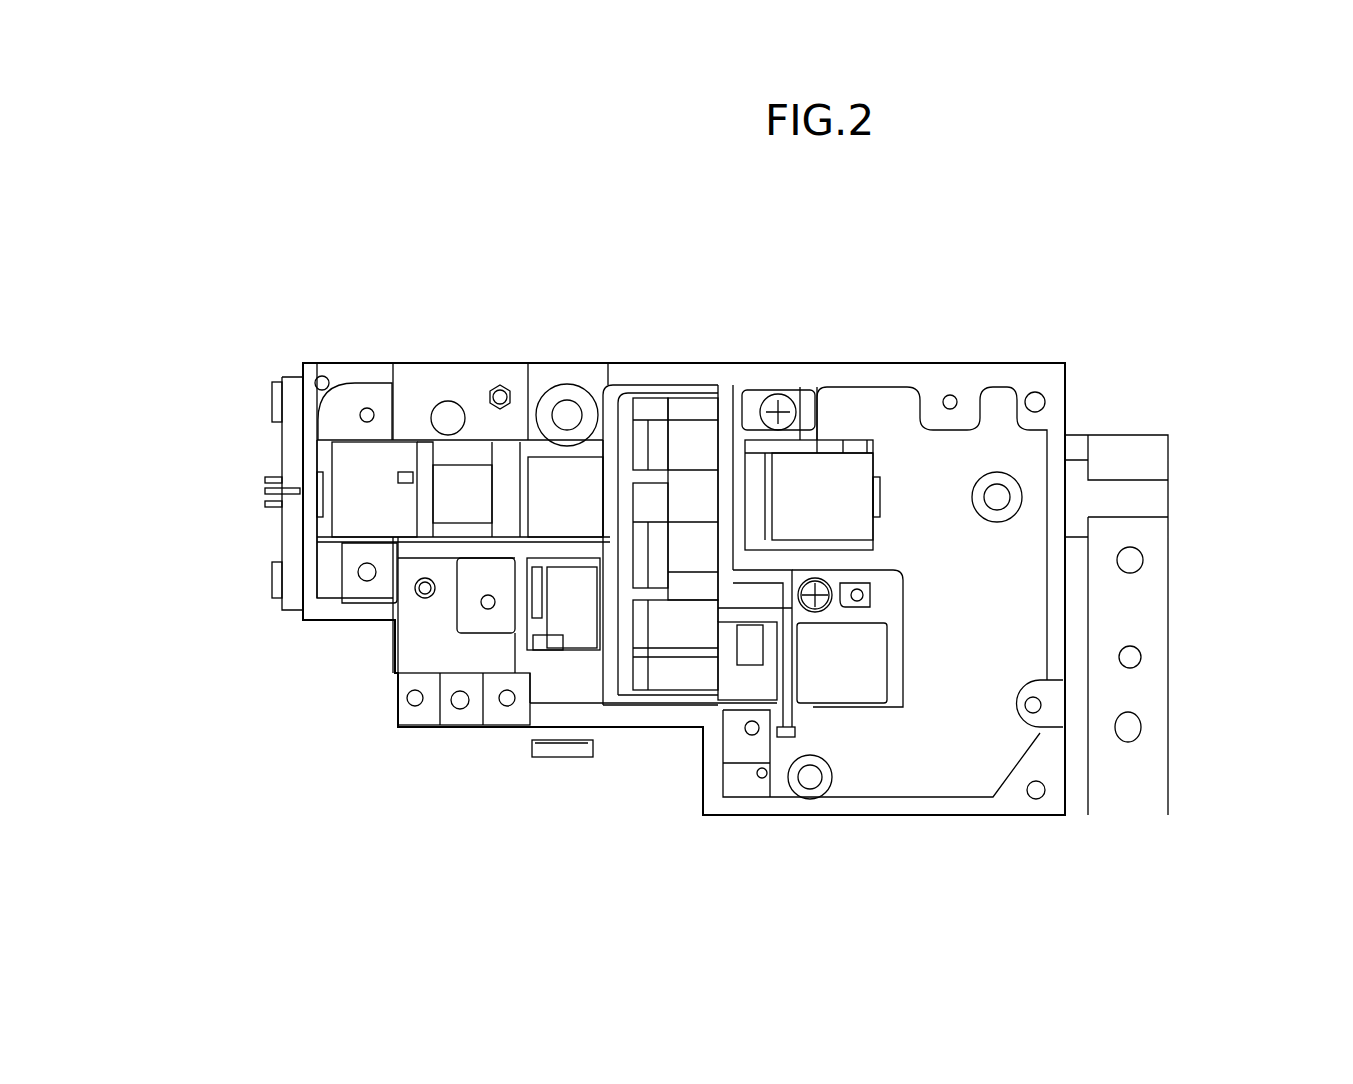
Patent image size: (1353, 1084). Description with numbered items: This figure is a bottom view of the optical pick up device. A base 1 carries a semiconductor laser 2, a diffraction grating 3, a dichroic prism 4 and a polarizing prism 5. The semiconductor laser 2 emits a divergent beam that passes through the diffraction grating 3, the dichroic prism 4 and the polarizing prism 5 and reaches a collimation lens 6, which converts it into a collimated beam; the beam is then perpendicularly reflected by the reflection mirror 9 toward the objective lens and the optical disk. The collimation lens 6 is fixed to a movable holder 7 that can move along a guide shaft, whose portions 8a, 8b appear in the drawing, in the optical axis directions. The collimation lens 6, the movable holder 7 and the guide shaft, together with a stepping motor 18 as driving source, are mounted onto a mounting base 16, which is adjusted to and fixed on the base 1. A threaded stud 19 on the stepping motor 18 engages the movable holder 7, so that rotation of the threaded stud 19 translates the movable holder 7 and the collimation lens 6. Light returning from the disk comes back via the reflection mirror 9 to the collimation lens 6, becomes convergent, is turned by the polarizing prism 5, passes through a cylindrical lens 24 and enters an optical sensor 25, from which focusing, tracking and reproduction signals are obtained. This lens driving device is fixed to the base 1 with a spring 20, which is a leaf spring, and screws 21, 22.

The base 1 is at (1132, 598).
The semiconductor laser 2 is at (257, 503).
The diffraction grating 3 is at (403, 492).
The dichroic prism 4 is at (468, 507).
The polarizing prism 5 is at (563, 483).
The collimation lens 6 is at (605, 390).
The bracket part 8a is at (668, 450).
The bracket part 8b is at (630, 413).
The movable holder 7 is at (655, 600).
The reflection mirror 9 is at (827, 497).
The mounting base 16 is at (743, 680).
The stepping motor 18 is at (830, 663).
The threaded stud 19 is at (683, 663).
The spring 20 is at (705, 577).
The screw 21 is at (775, 395).
The screw 22 is at (830, 590).
The cylindrical lens 24 is at (552, 650).
The optical sensor 25 is at (557, 757).